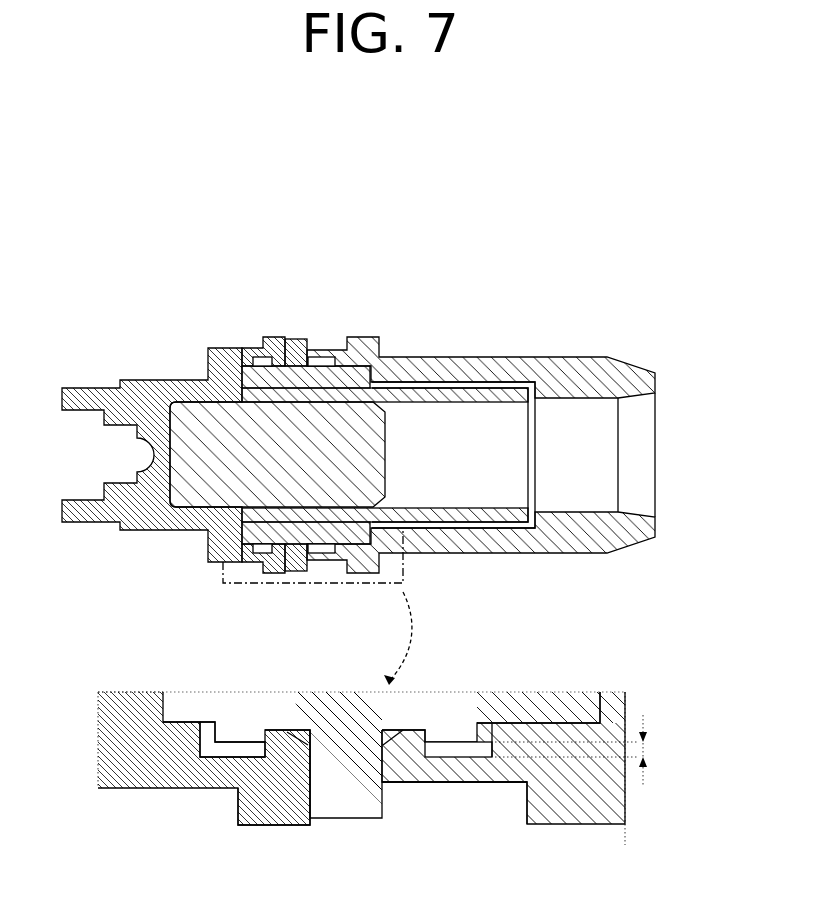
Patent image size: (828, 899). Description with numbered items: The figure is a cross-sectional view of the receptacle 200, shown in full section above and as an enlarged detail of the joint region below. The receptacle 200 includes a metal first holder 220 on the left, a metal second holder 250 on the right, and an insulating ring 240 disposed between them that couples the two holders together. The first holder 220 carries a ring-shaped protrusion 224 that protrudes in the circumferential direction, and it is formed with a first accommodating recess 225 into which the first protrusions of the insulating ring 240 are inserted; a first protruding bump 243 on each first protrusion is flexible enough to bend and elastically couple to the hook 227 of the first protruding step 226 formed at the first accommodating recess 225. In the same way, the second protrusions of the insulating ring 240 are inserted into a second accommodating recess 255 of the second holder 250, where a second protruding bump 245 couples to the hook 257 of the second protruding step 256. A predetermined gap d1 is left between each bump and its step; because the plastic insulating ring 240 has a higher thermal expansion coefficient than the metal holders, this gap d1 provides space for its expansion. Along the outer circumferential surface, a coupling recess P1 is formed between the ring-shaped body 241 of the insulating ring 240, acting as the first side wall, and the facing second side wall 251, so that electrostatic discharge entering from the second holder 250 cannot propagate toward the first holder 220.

The receptacle 200 is at (90, 221).
The first holder 220 is at (140, 353).
The first accommodating recess 225 is at (252, 353).
The first protruding step 226 is at (258, 352).
The insulating ring 240 is at (352, 572).
The ring-shaped body 241 is at (352, 818).
The first protruding bump 243 is at (240, 738).
The ring-shaped protrusion 224 is at (240, 826).
The hook 227 is at (290, 740).
The second holder 250 is at (490, 345).
The second side wall 251 is at (572, 817).
The second protruding bump 245 is at (458, 738).
The second accommodating recess 255 is at (557, 717).
The second protruding step 256 is at (445, 762).
The hook 257 is at (400, 745).
The coupling recess P1 is at (498, 800).
The gap d1 is at (582, 750).